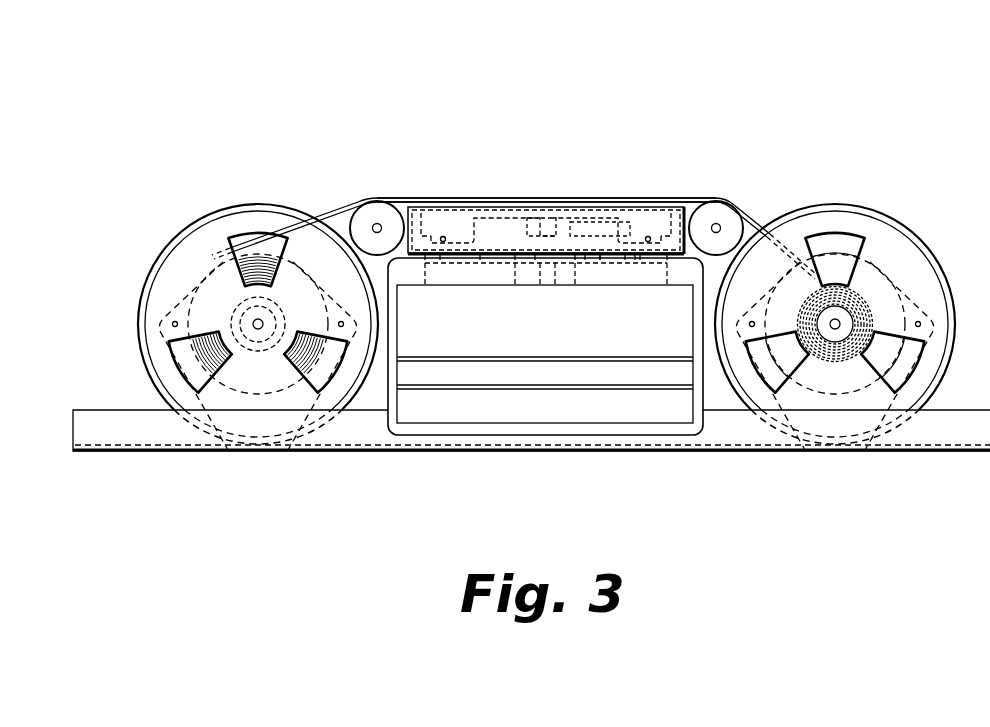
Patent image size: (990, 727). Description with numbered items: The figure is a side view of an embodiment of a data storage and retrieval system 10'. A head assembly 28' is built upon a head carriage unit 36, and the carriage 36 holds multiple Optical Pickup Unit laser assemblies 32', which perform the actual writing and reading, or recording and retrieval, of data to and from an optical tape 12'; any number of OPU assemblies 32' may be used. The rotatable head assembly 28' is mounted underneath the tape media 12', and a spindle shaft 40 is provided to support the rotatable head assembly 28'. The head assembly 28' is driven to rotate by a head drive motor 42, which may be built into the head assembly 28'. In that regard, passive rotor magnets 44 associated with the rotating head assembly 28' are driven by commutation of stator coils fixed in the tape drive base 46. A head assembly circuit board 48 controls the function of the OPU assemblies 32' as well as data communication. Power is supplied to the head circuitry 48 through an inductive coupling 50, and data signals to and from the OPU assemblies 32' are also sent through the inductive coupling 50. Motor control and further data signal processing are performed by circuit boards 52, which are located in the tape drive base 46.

The data storage and retrieval system 10' is at (531, 246).
The optical tape 12' is at (832, 300).
The head assembly 28' is at (546, 187).
The Optical Pickup Unit (OPU) laser assemblies 32' is at (379, 187).
The head carriage unit 36 is at (652, 207).
The spindle shaft 40 is at (535, 253).
The head drive motor 42 is at (547, 275).
The passive rotor magnets 44 is at (633, 262).
The tape drive base 46 is at (388, 377).
The head assembly circuit board 48 is at (595, 215).
The inductive coupling 50 is at (592, 262).
The circuit boards 52 is at (440, 361).